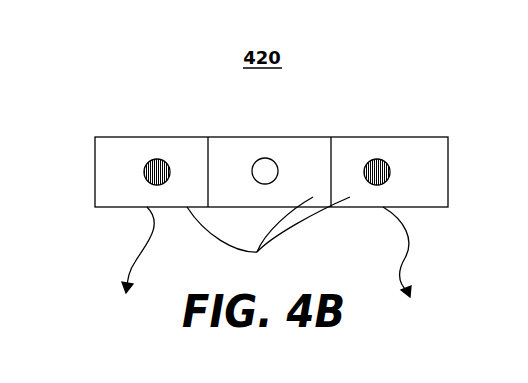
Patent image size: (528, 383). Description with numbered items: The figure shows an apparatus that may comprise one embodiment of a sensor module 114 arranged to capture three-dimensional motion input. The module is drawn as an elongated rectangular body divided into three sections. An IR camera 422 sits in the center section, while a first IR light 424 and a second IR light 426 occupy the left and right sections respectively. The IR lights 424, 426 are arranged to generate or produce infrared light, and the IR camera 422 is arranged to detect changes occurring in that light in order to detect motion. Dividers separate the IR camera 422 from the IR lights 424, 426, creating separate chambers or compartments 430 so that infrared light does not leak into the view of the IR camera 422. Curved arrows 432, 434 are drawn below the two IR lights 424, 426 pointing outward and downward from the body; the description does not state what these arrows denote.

The sensor module 114 is at (120, 207).
The IR camera 422 is at (278, 165).
The IR light 424 is at (151, 159).
The IR light 426 is at (376, 159).
The compartments 430 is at (257, 252).
The first direction arrow 432 is at (113, 297).
The second direction arrow 434 is at (420, 287).